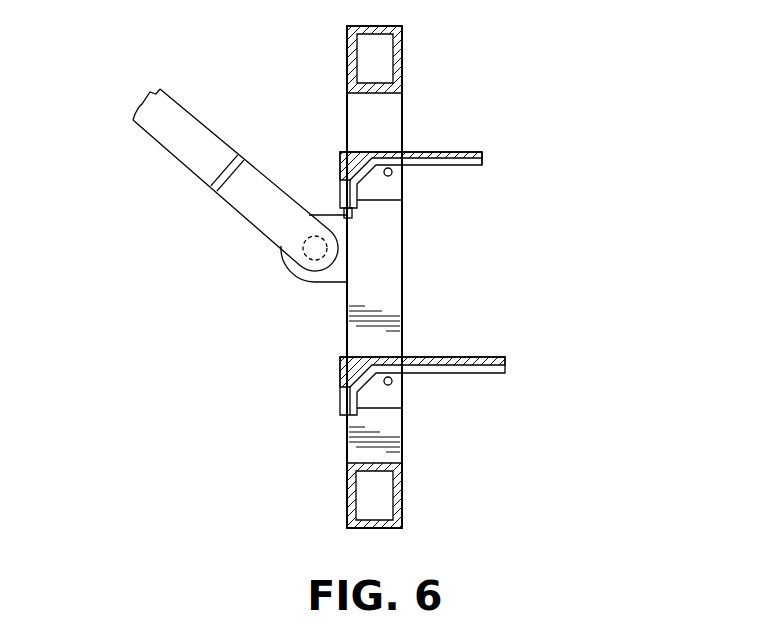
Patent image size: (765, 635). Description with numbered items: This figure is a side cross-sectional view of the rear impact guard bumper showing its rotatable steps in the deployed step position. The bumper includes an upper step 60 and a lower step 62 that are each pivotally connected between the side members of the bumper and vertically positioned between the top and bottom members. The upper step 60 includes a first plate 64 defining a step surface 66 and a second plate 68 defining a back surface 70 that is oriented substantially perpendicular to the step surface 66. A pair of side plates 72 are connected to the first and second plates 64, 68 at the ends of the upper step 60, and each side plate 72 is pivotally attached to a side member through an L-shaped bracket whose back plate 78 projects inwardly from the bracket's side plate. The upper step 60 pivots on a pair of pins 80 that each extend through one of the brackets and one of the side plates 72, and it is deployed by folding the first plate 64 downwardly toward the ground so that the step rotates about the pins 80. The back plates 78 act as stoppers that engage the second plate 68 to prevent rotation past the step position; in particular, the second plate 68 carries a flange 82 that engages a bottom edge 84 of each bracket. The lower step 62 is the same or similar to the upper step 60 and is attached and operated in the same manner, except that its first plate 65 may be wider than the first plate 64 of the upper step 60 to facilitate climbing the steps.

The upper step 60 is at (416, 174).
The lower step 62 is at (463, 390).
The first plate 64 is at (483, 157).
The first plate 65 is at (465, 357).
The step surface 66 is at (429, 152).
The second plate 68 is at (278, 240).
The back surface 70 is at (364, 151).
The side plates 72 is at (392, 187).
The back plate 78 is at (340, 152).
The pins 80 is at (404, 152).
The flange 82 is at (342, 218).
The bottom edge 84 is at (278, 240).